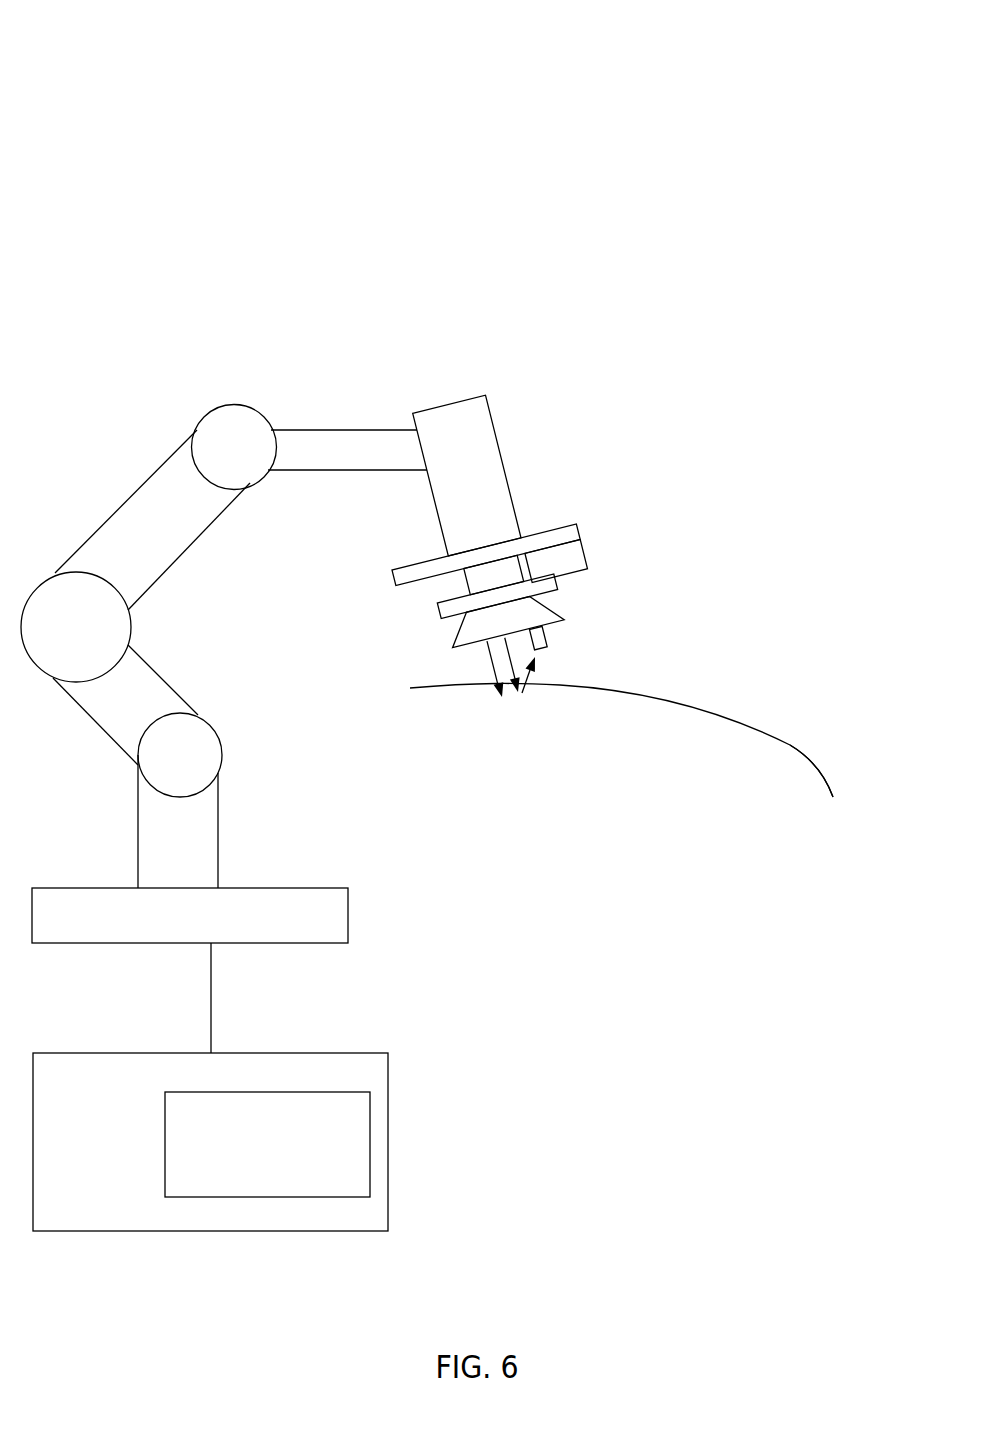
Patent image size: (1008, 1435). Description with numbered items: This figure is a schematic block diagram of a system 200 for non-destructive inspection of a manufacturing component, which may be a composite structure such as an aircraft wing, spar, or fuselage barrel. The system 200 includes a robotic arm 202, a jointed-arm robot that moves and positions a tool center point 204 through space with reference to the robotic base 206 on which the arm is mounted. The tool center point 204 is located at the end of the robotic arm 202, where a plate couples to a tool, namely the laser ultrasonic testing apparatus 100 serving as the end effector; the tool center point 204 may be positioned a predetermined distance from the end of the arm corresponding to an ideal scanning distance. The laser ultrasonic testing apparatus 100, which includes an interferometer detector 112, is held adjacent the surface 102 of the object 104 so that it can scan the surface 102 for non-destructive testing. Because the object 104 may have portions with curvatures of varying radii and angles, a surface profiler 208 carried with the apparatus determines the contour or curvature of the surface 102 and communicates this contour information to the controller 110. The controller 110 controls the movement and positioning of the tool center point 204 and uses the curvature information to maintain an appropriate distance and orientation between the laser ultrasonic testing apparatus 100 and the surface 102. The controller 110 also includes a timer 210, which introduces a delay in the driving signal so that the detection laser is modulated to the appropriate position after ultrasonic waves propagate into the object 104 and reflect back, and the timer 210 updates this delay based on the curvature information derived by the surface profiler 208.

The system 200 is at (175, 95).
The robotic arm 202 is at (251, 646).
The tool center point 204 is at (508, 550).
The robotic base 206 is at (190, 915).
The surface profiler 208 is at (556, 561).
The laser ultrasonic testing apparatus 100 is at (579, 596).
The interferometer detector 112 is at (547, 642).
The surface 102 is at (621, 740).
The object 104 is at (805, 750).
The controller 110 is at (210, 1142).
The timer 210 is at (267, 1144).